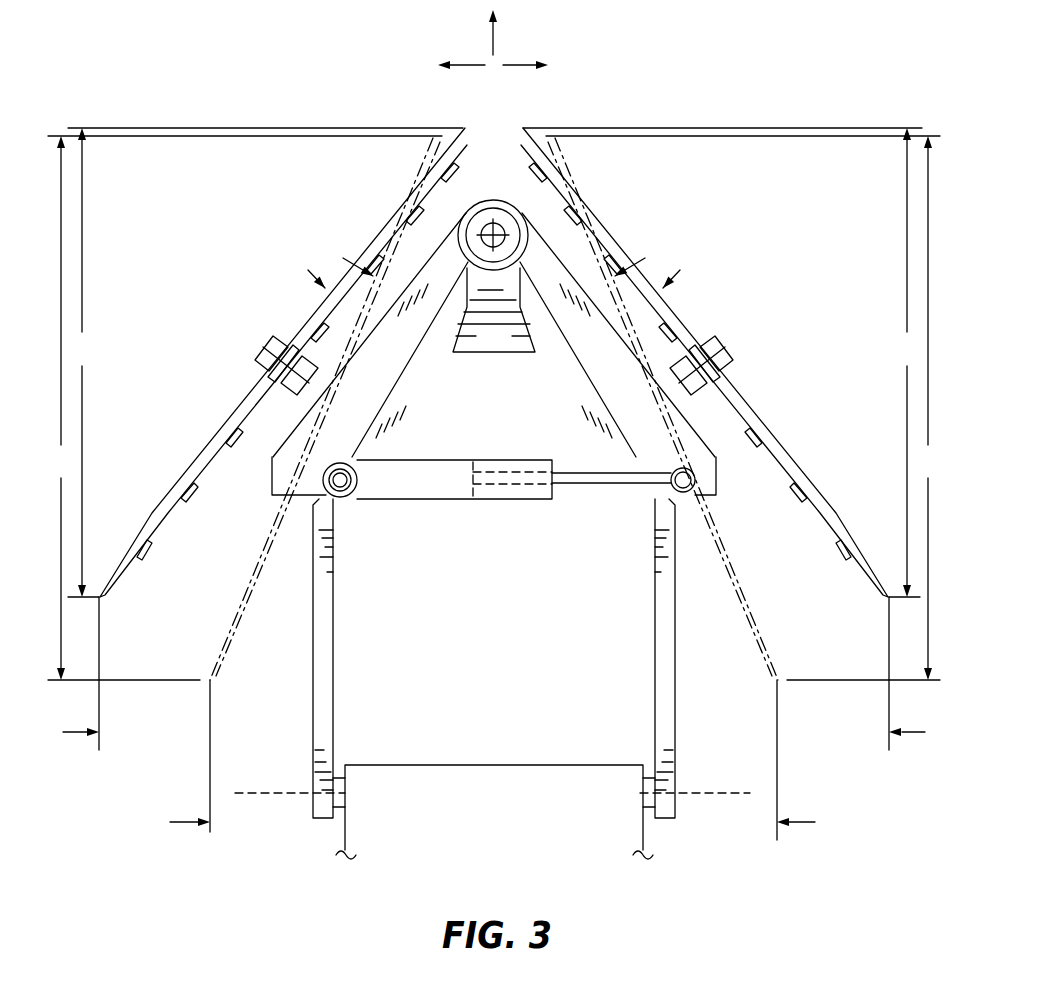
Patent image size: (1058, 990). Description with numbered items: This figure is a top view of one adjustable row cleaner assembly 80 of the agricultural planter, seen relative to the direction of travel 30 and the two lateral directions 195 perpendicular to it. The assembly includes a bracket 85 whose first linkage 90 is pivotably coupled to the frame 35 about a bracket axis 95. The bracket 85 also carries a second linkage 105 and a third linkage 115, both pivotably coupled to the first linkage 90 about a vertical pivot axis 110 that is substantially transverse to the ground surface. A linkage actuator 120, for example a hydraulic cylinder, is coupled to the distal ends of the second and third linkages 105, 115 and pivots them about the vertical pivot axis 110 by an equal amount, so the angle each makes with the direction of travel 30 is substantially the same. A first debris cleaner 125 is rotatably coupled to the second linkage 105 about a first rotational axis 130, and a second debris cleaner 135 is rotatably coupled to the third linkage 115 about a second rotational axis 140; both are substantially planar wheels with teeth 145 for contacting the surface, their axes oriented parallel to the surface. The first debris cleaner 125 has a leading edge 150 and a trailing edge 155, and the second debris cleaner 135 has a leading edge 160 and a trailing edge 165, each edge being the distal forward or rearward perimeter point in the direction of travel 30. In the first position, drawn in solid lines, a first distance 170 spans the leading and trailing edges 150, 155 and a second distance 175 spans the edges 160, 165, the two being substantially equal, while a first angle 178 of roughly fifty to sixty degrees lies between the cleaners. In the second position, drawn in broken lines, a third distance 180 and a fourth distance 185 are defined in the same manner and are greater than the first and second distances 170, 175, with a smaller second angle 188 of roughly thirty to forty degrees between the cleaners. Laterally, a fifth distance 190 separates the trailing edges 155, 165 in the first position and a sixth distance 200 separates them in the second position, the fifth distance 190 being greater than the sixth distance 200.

The direction of travel 30 is at (493, 42).
The frame 35 is at (455, 765).
The adjustable row cleaner assembly 80 is at (787, 96).
The bracket 85 is at (704, 828).
The first linkage 90 is at (654, 683).
The bracket axis 95 is at (700, 790).
The second linkage 105 is at (718, 472).
The vertical pivot axis 110 is at (493, 222).
The third linkage 115 is at (270, 472).
The linkage actuator 120 is at (443, 503).
The first debris cleaner 125 is at (616, 227).
The first rotational axis 130 is at (740, 338).
The second debris cleaner 135 is at (372, 227).
The second rotational axis 140 is at (248, 338).
The teeth 145 is at (178, 473).
The leading edge 150 is at (547, 131).
The trailing edge 155 is at (889, 597).
The leading edge 160 is at (441, 131).
The trailing edge 165 is at (208, 678).
The first distance 170 is at (722, 362).
The second distance 175 is at (265, 362).
The first angle 178 is at (682, 272).
The third distance 180 is at (747, 408).
The fourth distance 185 is at (242, 408).
The second angle 188 is at (645, 258).
The fifth distance 190 is at (906, 734).
The lateral directions 195 is at (456, 63).
The sixth distance 200 is at (800, 823).